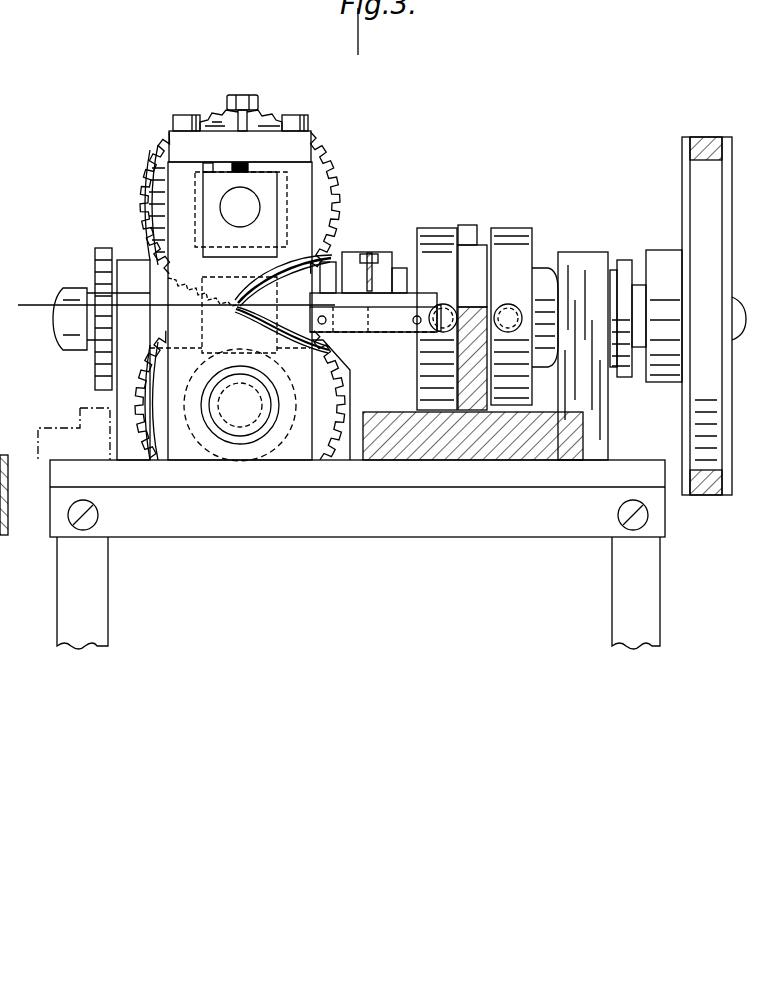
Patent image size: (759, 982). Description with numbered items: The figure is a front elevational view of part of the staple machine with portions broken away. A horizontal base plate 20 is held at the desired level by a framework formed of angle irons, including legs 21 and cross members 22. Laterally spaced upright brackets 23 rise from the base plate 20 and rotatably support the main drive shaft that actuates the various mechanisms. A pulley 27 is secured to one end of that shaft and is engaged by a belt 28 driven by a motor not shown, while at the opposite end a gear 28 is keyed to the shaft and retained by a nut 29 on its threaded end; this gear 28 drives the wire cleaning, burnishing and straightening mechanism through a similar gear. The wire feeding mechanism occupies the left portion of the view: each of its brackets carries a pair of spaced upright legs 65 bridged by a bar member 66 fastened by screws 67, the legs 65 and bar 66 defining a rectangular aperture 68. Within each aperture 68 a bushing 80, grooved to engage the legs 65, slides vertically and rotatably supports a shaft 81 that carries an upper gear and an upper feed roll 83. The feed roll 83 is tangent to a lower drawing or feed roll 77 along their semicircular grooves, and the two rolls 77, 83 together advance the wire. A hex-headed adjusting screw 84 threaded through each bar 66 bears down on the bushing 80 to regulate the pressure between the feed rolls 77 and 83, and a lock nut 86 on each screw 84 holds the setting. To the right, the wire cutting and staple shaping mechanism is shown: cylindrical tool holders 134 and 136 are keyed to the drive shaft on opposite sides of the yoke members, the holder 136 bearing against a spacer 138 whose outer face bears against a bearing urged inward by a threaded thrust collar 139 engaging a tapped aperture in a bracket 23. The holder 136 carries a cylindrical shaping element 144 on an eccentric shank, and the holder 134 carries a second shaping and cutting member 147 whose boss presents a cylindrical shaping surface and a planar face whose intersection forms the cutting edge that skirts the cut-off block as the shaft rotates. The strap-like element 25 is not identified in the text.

The base plate 20 is at (320, 478).
The legs 21 is at (98, 586).
The cross members 22 is at (207, 522).
The upright brackets 23 is at (136, 262).
The strap 25 is at (333, 258).
The pulley 27 is at (684, 154).
The gear 28 is at (96, 248).
The nut 29 is at (72, 290).
The upright legs 65 is at (178, 182).
The bar member 66 is at (305, 147).
The screws 67 is at (178, 115).
The rectangular apertures 68 is at (204, 170).
The feed roll 77 is at (150, 358).
The bushings 80 is at (200, 238).
The shaft 81 is at (249, 215).
The feed roll 83 is at (143, 207).
The adjusting screws 84 is at (242, 97).
The lock nuts 86 is at (266, 123).
The tool holder 134 is at (452, 229).
The tool holder 136 is at (526, 229).
The spacer 138 is at (545, 268).
The threaded thrust collars 139 is at (622, 260).
The shaping element 144 is at (509, 304).
The shaping and cutting member 147 is at (446, 304).